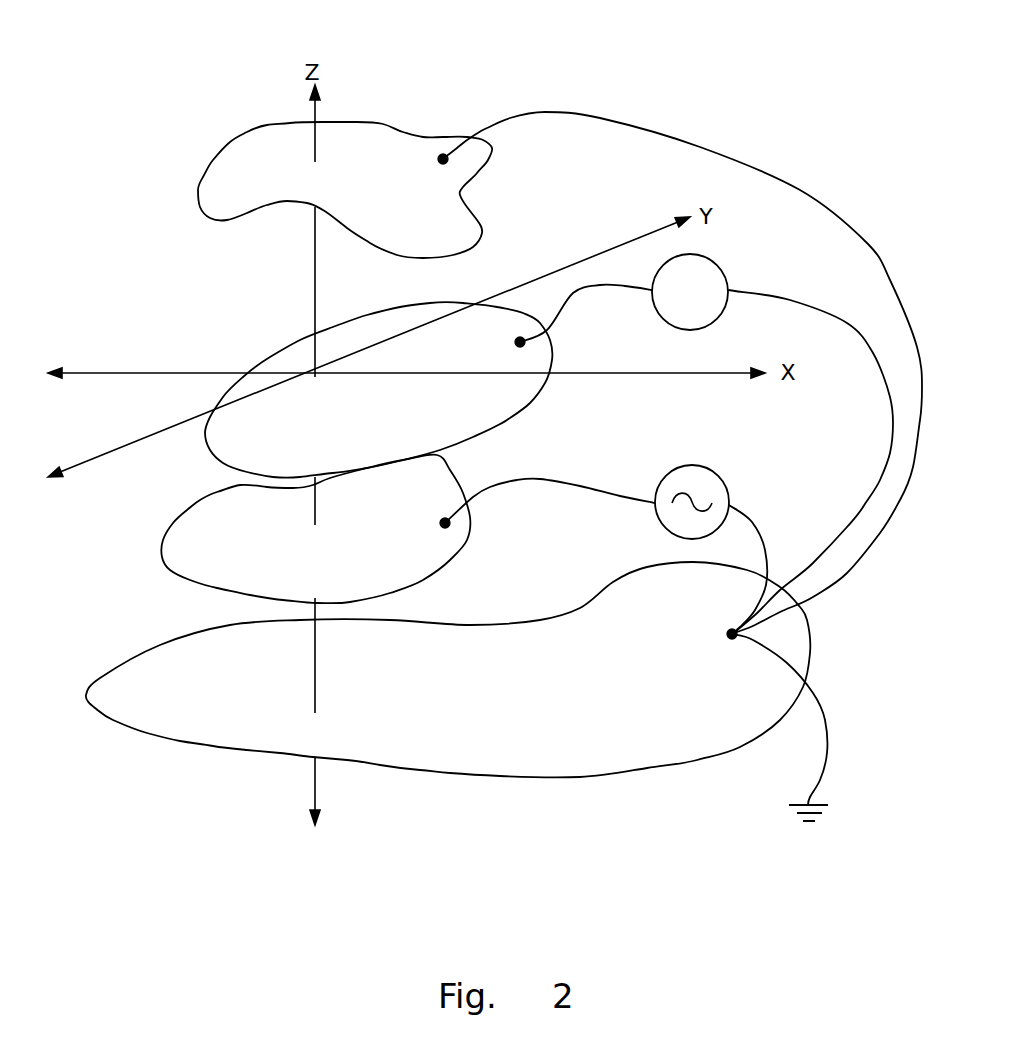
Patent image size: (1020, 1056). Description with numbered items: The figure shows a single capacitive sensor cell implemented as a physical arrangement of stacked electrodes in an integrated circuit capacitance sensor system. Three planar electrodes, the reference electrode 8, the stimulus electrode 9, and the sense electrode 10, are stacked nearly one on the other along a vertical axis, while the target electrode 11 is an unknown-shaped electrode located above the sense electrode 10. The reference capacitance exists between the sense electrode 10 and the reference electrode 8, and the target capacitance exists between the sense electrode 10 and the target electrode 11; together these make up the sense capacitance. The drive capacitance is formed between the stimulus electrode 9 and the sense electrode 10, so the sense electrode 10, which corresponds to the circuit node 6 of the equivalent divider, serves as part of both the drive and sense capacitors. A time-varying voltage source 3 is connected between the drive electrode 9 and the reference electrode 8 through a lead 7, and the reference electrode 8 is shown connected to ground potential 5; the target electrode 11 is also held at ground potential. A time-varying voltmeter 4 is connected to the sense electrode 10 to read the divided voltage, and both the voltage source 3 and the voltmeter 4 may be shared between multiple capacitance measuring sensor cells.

The time-varying voltage source 3 is at (663, 531).
The time-varying voltmeter 4 is at (728, 283).
The ground potential 5 is at (827, 728).
The node 6 is at (600, 283).
The lead from source to electrode 7 is at (540, 478).
The reference electrode 8 is at (162, 645).
The stimulus electrode 9 is at (200, 503).
The sense electrode 10 is at (275, 352).
The target electrode 11 is at (237, 142).